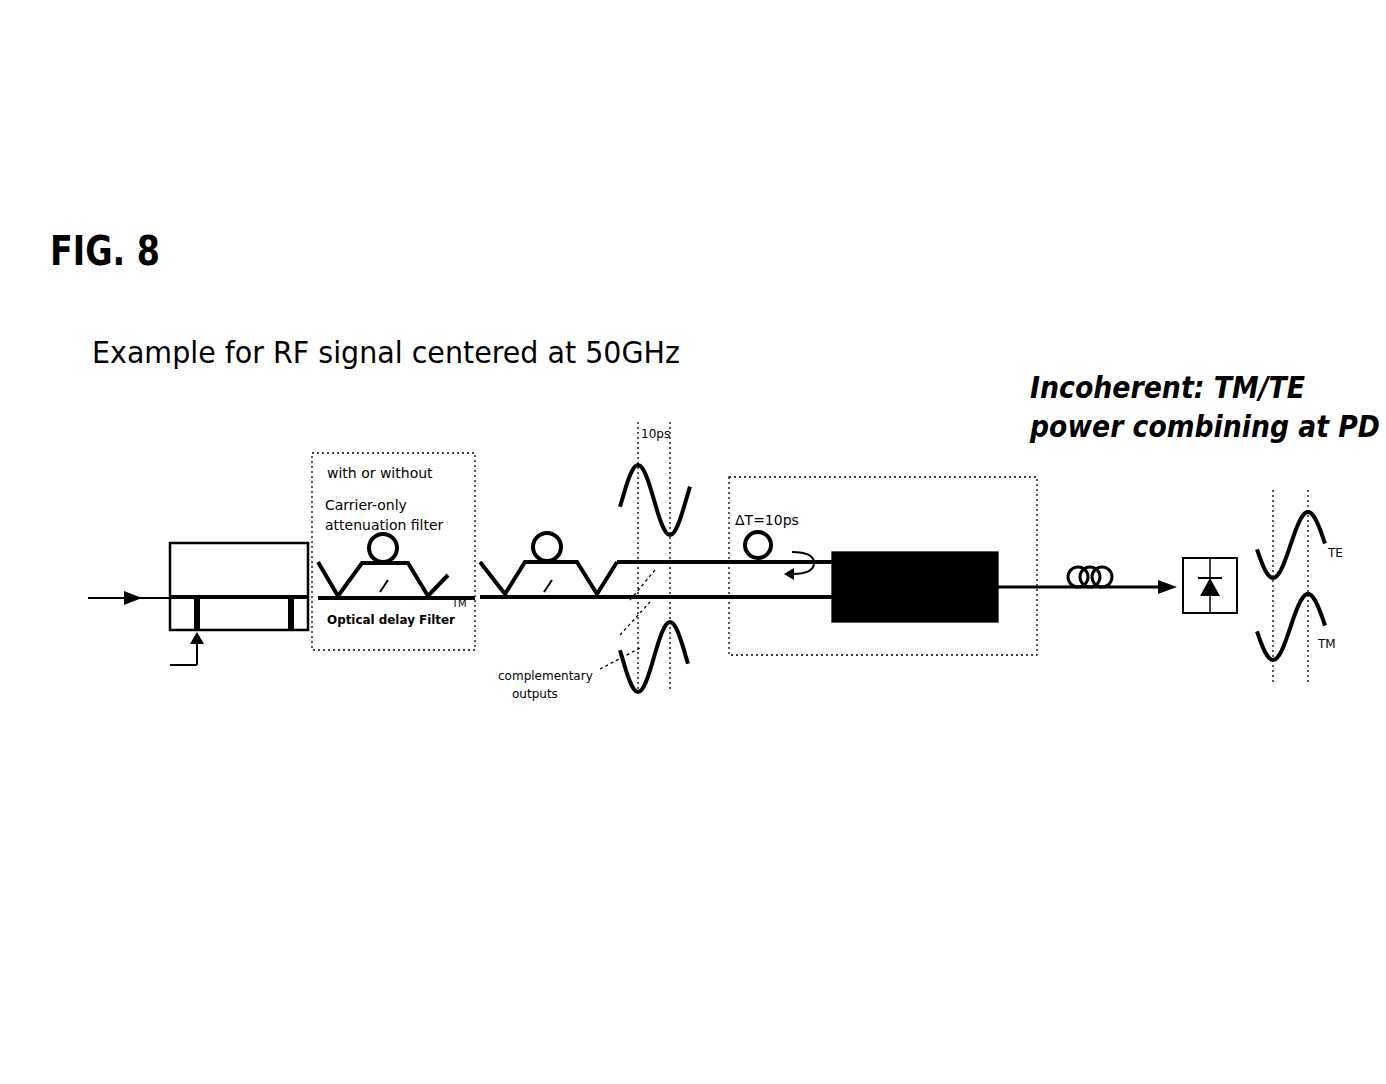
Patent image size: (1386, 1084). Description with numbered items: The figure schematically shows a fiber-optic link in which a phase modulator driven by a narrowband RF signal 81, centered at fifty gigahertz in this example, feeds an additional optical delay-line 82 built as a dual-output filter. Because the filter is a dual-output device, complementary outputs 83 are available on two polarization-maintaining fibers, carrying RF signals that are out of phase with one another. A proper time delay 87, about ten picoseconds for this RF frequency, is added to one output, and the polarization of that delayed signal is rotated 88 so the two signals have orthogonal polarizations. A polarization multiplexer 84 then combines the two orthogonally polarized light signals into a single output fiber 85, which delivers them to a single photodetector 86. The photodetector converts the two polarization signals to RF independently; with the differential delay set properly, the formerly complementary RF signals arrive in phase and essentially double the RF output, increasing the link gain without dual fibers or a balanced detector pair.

The narrowband RF signal 81 is at (198, 639).
The optical delay-line 82 is at (549, 522).
The complementary outputs 83 is at (724, 631).
The polarization multiplexer 84 is at (915, 517).
The single mode fiber 85 is at (1087, 541).
The photodetector 86 is at (1168, 642).
The time delay 87 is at (730, 487).
The polarization rotation 88 is at (813, 498).